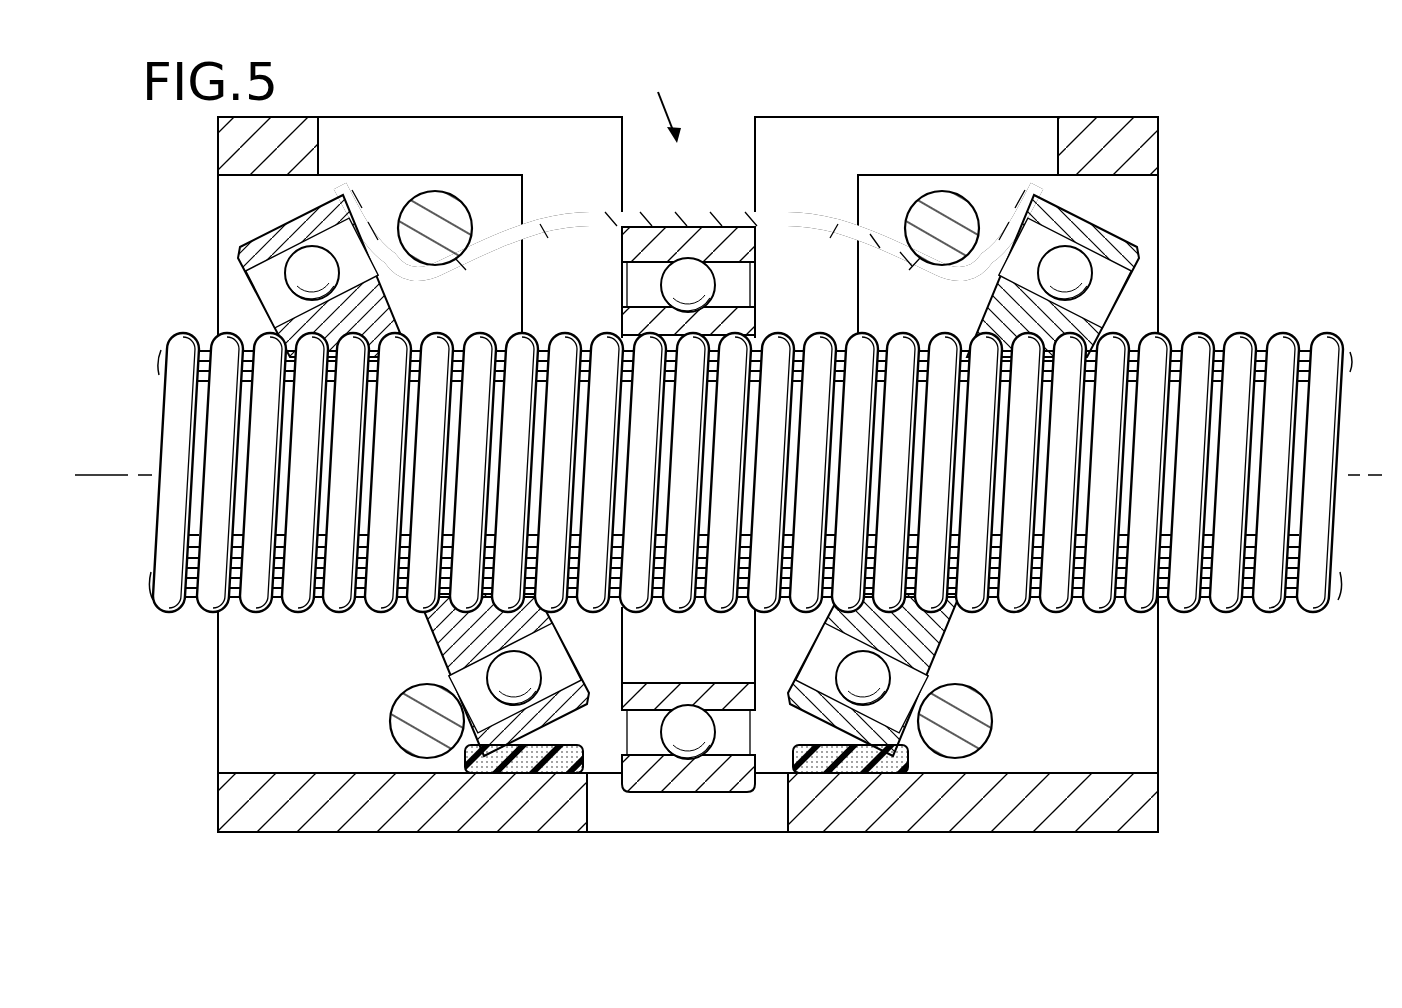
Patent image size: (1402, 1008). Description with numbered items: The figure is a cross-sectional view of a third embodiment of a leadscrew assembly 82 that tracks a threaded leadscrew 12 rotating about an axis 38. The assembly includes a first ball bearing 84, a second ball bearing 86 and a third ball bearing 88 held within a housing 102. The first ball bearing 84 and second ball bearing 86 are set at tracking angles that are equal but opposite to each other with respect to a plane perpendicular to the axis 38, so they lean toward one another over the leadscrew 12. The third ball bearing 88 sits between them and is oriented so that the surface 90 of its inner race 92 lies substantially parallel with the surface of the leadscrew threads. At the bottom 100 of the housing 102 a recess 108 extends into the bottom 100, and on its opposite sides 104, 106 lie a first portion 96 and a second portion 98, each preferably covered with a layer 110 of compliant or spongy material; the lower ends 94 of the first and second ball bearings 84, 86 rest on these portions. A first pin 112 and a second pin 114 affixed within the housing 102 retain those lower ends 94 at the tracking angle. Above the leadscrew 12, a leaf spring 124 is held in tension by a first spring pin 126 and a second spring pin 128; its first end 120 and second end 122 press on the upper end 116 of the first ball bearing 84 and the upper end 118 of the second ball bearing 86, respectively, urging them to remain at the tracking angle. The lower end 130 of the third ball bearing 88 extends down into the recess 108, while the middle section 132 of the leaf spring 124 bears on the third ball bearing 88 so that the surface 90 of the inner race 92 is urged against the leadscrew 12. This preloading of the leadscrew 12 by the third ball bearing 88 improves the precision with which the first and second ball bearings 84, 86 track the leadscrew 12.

The leadscrew 12 is at (1292, 335).
The axis 38 is at (130, 470).
The leadscrew assembly 82 is at (630, 88).
The first ball bearing 84 is at (298, 223).
The second ball bearing 86 is at (1083, 222).
The third ball bearing 88 is at (757, 250).
The surface 90 is at (632, 340).
The inner race 92 is at (757, 312).
The lower ends 94 is at (553, 660).
The first portion 96 is at (488, 775).
The second portion 98 is at (866, 775).
The bottom 100 is at (1090, 773).
The housing 102 is at (1140, 136).
The side 104 is at (570, 775).
The side 106 is at (800, 775).
The recess 108 is at (690, 810).
The layer 110 is at (556, 745).
The first pin 112 is at (417, 697).
The second pin 114 is at (966, 700).
The upper end 116 is at (268, 297).
The upper end 118 is at (1110, 290).
The first end 120 is at (355, 193).
The second end 122 is at (1030, 194).
The leaf spring 124 is at (797, 214).
The first spring pin 126 is at (437, 200).
The second spring pin 128 is at (945, 200).
The lower end 130 is at (735, 745).
The middle section 132 is at (703, 219).